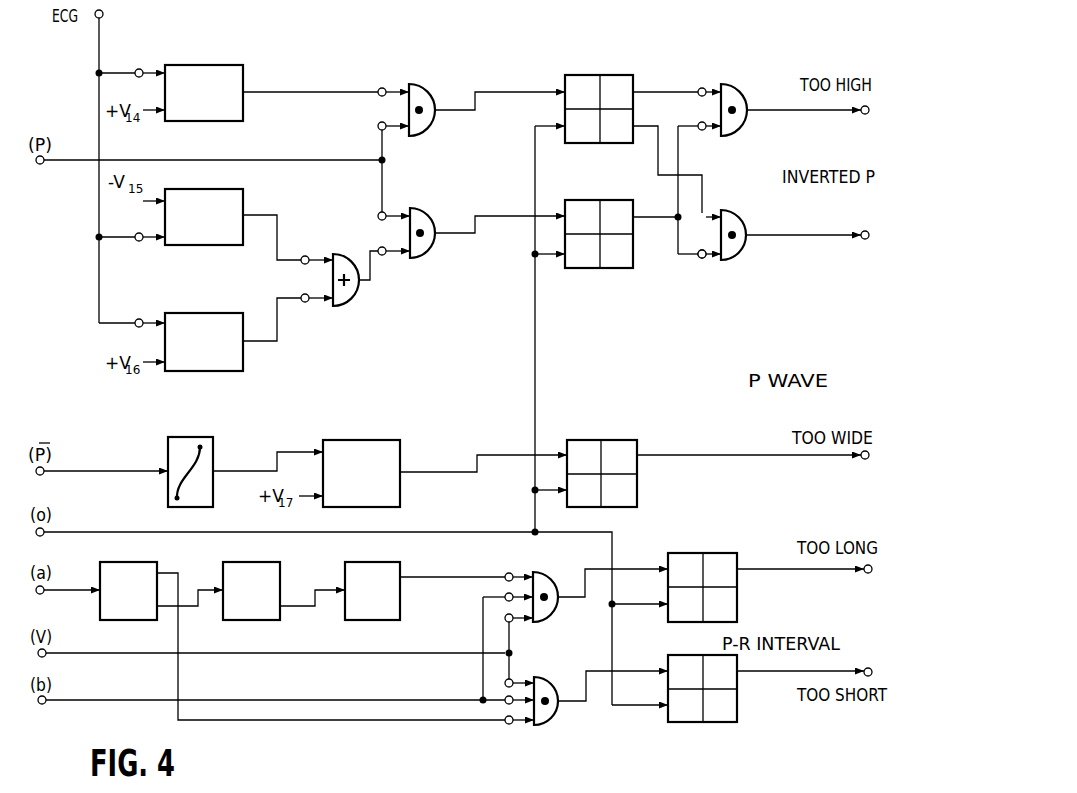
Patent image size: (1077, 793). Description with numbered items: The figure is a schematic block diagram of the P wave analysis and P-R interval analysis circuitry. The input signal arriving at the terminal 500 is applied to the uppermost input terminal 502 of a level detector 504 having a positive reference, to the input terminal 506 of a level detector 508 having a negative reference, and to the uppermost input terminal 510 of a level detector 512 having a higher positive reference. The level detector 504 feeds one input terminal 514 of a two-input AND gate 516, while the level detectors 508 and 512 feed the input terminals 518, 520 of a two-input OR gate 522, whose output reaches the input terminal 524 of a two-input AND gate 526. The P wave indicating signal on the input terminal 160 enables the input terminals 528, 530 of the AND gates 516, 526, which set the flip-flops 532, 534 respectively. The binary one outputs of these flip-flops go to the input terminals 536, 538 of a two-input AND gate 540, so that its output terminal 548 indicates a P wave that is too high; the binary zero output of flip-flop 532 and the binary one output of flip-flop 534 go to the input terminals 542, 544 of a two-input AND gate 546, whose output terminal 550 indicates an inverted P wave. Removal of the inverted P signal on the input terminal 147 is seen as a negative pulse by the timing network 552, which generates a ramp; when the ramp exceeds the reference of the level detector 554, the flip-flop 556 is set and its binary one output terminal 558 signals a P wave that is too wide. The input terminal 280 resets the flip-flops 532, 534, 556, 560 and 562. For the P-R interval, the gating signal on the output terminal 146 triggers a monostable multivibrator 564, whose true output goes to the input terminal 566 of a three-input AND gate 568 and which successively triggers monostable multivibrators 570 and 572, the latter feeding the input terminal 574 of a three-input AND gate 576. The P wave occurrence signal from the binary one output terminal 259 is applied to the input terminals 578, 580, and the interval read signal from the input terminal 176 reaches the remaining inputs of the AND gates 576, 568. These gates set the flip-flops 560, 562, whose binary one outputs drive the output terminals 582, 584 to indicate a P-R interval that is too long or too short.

The terminal 500 is at (103, 15).
The uppermost input terminal 502 is at (141, 69).
The level detector 504 is at (236, 65).
The input terminal 506 is at (120, 252).
The level detector 508 is at (236, 189).
The uppermost input terminal 510 is at (147, 307).
The level detector 512 is at (240, 313).
The input terminal 514 is at (382, 88).
The two-input AND gate 516 is at (426, 86).
The input terminal 518 is at (312, 251).
The input terminal 520 is at (302, 296).
The two-input OR gate 522 is at (358, 251).
The input terminal 524 is at (384, 256).
The two-input AND gate 526 is at (438, 222).
The input terminal 528 is at (379, 127).
The input terminal 530 is at (385, 212).
The flip-flop 532 is at (605, 75).
The flip-flop 534 is at (609, 200).
The input terminal 536 is at (704, 88).
The input terminal 538 is at (699, 124).
The two-input AND gate 540 is at (753, 74).
The input terminal 542 is at (706, 215).
The input terminal 544 is at (698, 260).
The two-input AND gate 546 is at (738, 260).
The output terminal 548 is at (863, 114).
The output terminal 550 is at (863, 240).
The timing network 552 is at (225, 423).
The level detector 554 is at (398, 440).
The flip-flop 556 is at (595, 440).
The binary 1 output terminal 558 is at (863, 458).
The flip-flop 560 is at (714, 553).
The flip-flop 562 is at (684, 723).
The monostable multivibrator 564 is at (132, 562).
The input terminal 566 is at (506, 727).
The three-input AND gate 568 is at (552, 729).
The monostable multivibrator 570 is at (254, 562).
The monostable multivibrator 572 is at (399, 562).
The input terminal 574 is at (507, 573).
The three-input AND gate 576 is at (562, 567).
The input terminal 578 is at (509, 623).
The input terminal 580 is at (512, 679).
The output terminal 582 is at (505, 597).
The output terminal 584 is at (505, 698).
The input terminal 160 is at (38, 165).
The input terminal 147 is at (43, 476).
The input terminal 280 is at (42, 537).
The output terminal 146 is at (42, 595).
The binary 1 output terminal 259 is at (44, 658).
The input terminal 176 is at (44, 705).